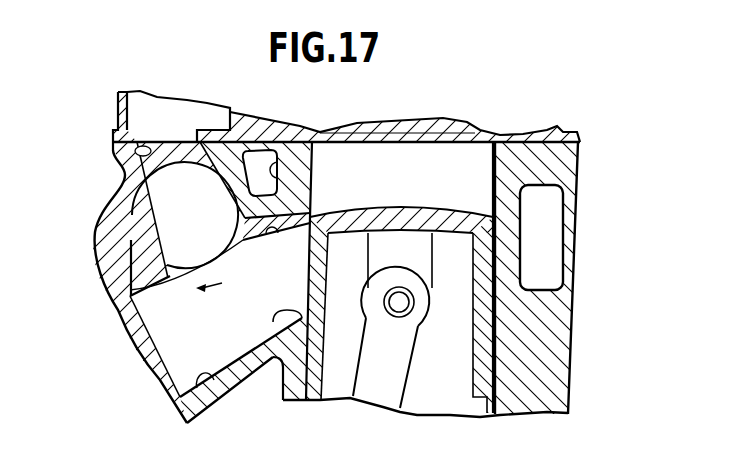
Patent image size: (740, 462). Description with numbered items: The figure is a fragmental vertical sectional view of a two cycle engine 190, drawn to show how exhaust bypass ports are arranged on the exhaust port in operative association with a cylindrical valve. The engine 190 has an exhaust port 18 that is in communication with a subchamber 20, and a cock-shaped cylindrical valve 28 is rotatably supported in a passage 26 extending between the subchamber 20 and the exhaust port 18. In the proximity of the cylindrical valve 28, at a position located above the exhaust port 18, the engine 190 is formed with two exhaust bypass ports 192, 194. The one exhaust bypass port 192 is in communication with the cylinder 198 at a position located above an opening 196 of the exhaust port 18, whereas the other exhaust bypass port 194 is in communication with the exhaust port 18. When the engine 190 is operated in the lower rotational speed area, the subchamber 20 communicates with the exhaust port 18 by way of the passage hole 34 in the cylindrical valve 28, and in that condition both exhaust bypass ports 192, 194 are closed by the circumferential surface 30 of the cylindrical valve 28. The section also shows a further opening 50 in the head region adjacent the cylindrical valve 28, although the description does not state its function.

The subchamber 20 is at (162, 120).
The passage 26 is at (134, 152).
The cylindrical valve 28 is at (142, 207).
The exhaust bypass port 194 is at (128, 268).
The circumferential surface 30 is at (158, 283).
The passage hole 34 is at (226, 270).
The opening 50 is at (312, 137).
The exhaust bypass port 192 is at (270, 240).
The cylinder 198 is at (313, 197).
The two cycle engine 190 is at (585, 218).
The opening 196 is at (272, 322).
The exhaust port 18 is at (209, 392).